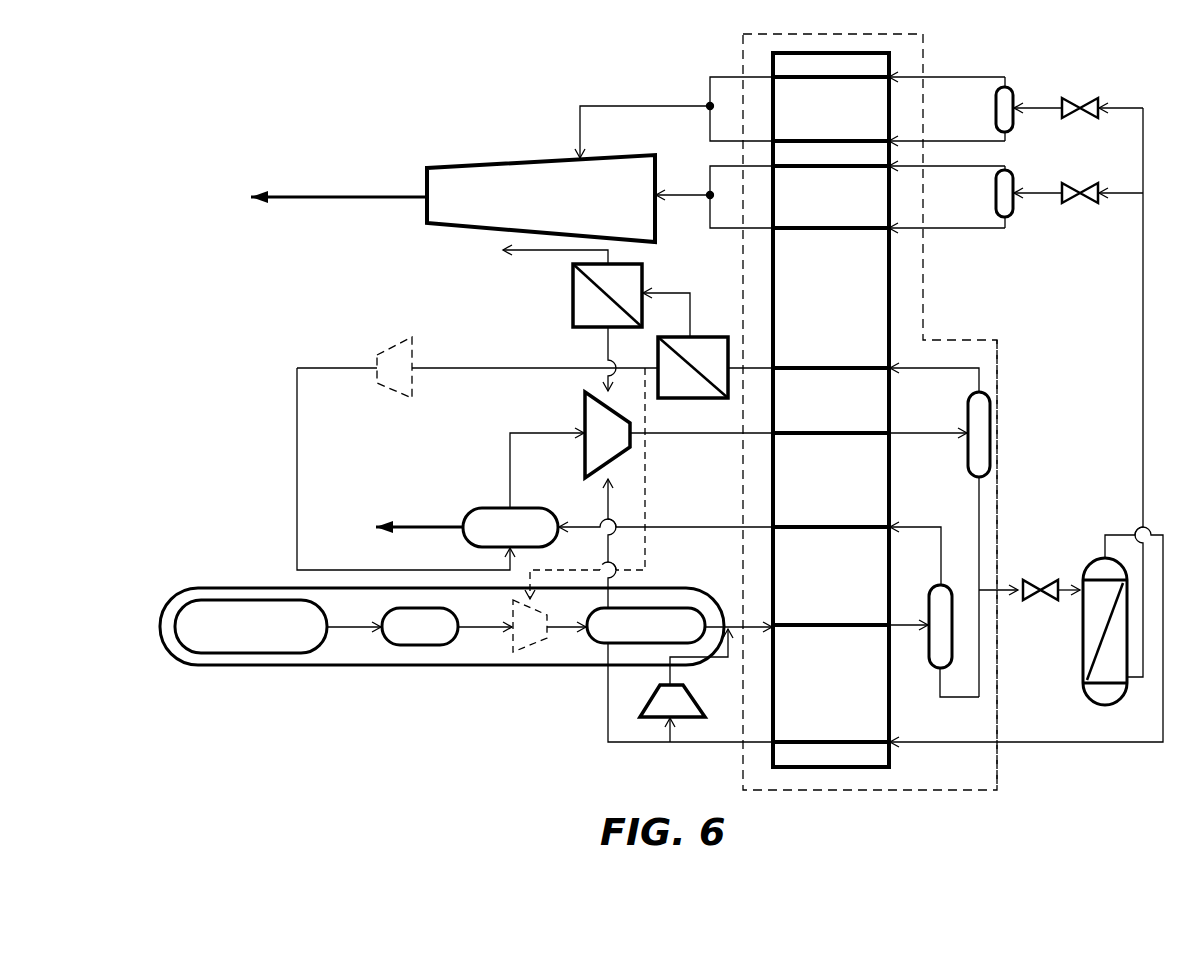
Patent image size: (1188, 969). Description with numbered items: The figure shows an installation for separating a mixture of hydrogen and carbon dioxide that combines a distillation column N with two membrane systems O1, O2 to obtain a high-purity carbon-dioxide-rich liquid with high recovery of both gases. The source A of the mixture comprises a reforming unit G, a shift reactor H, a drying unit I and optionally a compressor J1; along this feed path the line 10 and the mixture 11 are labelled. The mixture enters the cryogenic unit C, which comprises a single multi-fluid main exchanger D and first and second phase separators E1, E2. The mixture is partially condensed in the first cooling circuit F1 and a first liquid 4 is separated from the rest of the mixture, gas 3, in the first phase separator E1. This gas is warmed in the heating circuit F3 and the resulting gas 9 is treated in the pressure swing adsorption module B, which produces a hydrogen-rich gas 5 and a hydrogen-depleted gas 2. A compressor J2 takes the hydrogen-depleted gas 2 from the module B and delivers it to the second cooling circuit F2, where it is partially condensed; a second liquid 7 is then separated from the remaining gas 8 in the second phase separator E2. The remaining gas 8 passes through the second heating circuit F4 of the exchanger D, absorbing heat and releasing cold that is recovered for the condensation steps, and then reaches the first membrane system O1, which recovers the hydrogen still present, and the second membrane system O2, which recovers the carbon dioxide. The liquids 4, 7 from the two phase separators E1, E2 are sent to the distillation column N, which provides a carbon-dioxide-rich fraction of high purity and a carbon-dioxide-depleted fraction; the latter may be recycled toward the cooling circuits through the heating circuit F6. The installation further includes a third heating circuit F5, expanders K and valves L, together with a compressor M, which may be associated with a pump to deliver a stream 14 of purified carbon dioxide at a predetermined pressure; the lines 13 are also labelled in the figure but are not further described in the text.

The hydrogen-depleted gas 2 is at (524, 432).
The gas 3 is at (912, 526).
The first liquid 4 is at (965, 700).
The hydrogen-rich gas 5 is at (428, 526).
The second liquid 7 is at (975, 545).
The remaining gas 8 is at (955, 370).
The gas 9 is at (681, 525).
The feed line from G to H 10 is at (350, 630).
The mixture 11 is at (484, 630).
The expanded gas lines to expander M 13 is at (655, 104).
The stream of purified carbon dioxide 14 is at (350, 194).
The source of mixture A is at (205, 666).
The pressure swing adsorption module for hydrogen B is at (510, 527).
The cryogenic unit C is at (1002, 505).
The main exchanger D is at (825, 768).
The first phase separator E1 is at (942, 625).
The second phase separator E2 is at (980, 418).
The first cooling circuit F1 is at (805, 622).
The second cooling circuit F2 is at (858, 430).
The heating circuit F3 is at (805, 524).
The second heating circuit F4 is at (855, 365).
The third heating circuit F5 is at (872, 80).
The heating circuit F6 is at (860, 739).
The reforming unit G is at (251, 626).
The shift reactor H is at (420, 626).
The drying unit I is at (646, 625).
The compressor J1 is at (530, 626).
The compressor J2 is at (607, 435).
The expanders K is at (1012, 95).
The valves L is at (1075, 100).
The compressor M is at (541, 198).
The distillation column N is at (1026, 634).
The first membrane system O1 is at (685, 345).
The second membrane system O2 is at (607, 295).